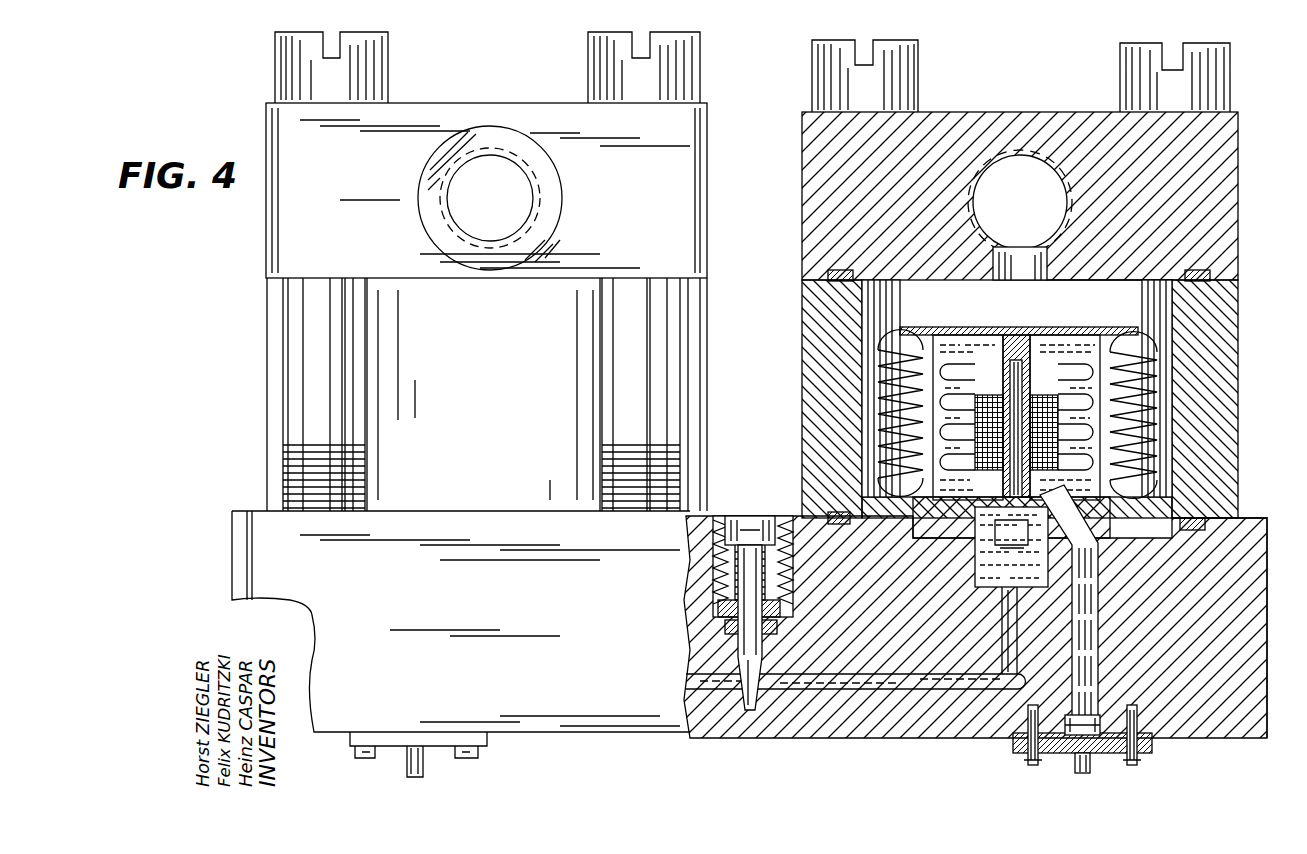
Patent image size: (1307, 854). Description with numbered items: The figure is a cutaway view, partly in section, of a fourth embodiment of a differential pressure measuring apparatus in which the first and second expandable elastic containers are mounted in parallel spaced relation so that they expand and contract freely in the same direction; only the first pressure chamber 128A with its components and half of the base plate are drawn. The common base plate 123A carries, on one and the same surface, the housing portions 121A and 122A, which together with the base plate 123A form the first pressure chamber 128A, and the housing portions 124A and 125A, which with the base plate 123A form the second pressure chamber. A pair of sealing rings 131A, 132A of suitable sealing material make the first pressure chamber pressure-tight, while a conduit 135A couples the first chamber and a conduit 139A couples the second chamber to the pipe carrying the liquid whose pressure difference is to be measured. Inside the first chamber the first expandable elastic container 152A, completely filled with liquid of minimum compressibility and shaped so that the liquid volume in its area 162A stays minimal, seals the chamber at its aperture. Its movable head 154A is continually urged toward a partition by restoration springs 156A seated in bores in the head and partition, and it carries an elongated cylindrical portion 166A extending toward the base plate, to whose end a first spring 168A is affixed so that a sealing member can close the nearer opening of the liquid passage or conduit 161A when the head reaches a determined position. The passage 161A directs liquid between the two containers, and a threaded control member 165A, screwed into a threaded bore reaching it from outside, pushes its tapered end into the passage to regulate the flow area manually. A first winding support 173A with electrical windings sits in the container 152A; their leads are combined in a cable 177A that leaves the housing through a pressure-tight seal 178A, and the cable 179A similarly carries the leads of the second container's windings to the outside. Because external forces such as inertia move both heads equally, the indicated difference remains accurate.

The housing portion 121A is at (1222, 365).
The housing portion 122A is at (1062, 130).
The common base plate 123A is at (247, 540).
The housing portion 124A is at (513, 411).
The housing portion 125A is at (508, 122).
The first pressure chamber 128A is at (1096, 278).
The sealing ring 131A is at (848, 268).
The sealing ring 132A is at (1200, 530).
The conduit 135A is at (1052, 190).
The conduit 139A is at (533, 200).
The first expandable elastic container 152A is at (1102, 346).
The head 154A is at (940, 340).
The restoration spring 156A is at (880, 405).
The liquid passage or conduit 161A is at (882, 683).
The area of the first elastic container 162A is at (1052, 348).
The threaded control member 165A is at (690, 650).
The elongated cylindrical portion 166A is at (1008, 338).
The first spring 168A is at (975, 627).
The first winding support 173A is at (948, 540).
The cable 177A is at (1078, 770).
The pressure-tight seal 178A is at (1085, 688).
The cable 179A is at (423, 772).